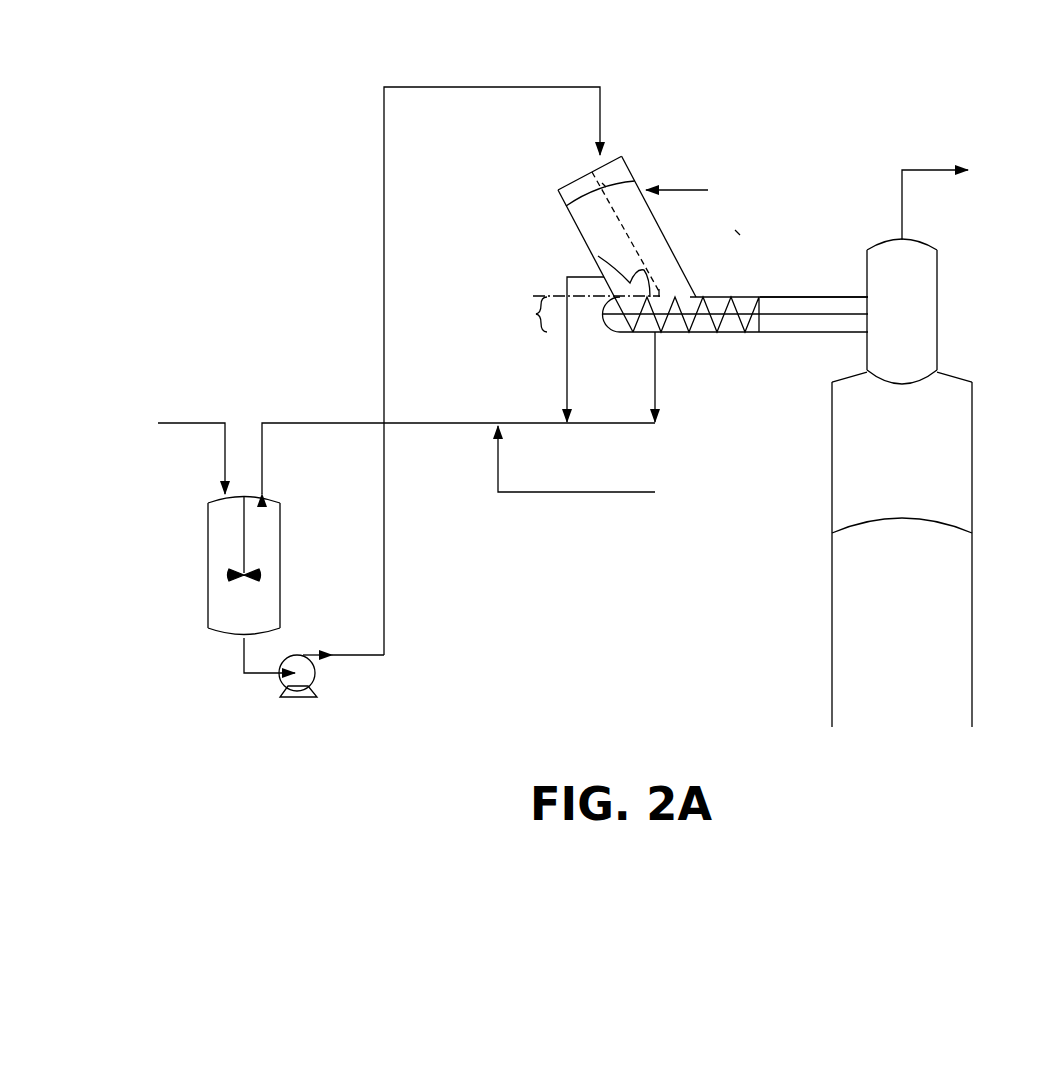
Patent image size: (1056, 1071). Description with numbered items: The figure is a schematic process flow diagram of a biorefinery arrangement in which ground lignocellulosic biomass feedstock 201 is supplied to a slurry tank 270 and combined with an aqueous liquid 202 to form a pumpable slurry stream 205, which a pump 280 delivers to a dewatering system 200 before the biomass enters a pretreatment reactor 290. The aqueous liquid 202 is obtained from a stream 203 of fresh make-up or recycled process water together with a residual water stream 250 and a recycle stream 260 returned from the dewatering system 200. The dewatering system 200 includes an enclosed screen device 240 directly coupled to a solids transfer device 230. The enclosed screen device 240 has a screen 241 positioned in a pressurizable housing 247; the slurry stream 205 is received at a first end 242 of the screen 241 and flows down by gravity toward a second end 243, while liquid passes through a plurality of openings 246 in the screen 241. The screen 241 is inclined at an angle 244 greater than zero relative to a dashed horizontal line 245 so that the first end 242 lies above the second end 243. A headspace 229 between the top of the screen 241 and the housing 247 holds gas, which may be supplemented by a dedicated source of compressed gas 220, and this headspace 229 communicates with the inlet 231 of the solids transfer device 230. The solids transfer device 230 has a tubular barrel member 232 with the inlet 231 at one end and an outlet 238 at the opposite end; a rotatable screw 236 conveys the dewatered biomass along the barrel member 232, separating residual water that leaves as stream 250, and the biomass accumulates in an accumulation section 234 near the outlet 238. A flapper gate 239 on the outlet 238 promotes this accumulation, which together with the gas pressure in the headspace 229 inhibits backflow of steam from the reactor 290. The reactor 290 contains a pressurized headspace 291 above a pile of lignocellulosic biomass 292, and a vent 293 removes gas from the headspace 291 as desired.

The dewatering system 200 is at (712, 218).
The ground lignocellulosic biomass feedstock 201 is at (188, 423).
The aqueous liquid 202 is at (318, 423).
The stream 203 is at (582, 492).
The slurry stream 205 is at (480, 87).
The compressed gas 220 is at (696, 190).
The headspace 229 is at (653, 221).
The solids transfer device 230 is at (754, 287).
The inlet 231 is at (684, 287).
The barrel member 232 is at (687, 334).
The accumulation section 234 is at (838, 297).
The rotatable screw 236 is at (741, 334).
The outlet 238 is at (868, 373).
The flapper gate 239 is at (878, 322).
The enclosed screen device 240 is at (561, 172).
The screen 241 is at (568, 206).
The first end 242 is at (586, 167).
The second end 243 is at (673, 287).
The angle 244 is at (598, 255).
The horizontal line 245 is at (589, 321).
The openings 246 is at (607, 185).
The housing 247 is at (617, 201).
The residual water stream 250 is at (655, 379).
The recycle stream 260 is at (567, 379).
The slurry tank 270 is at (285, 597).
The pump 280 is at (316, 675).
The pretreatment reactor 290 is at (972, 368).
The headspace 291 is at (955, 441).
The lignocellulosic biomass 292 is at (955, 610).
The vent 293 is at (934, 165).